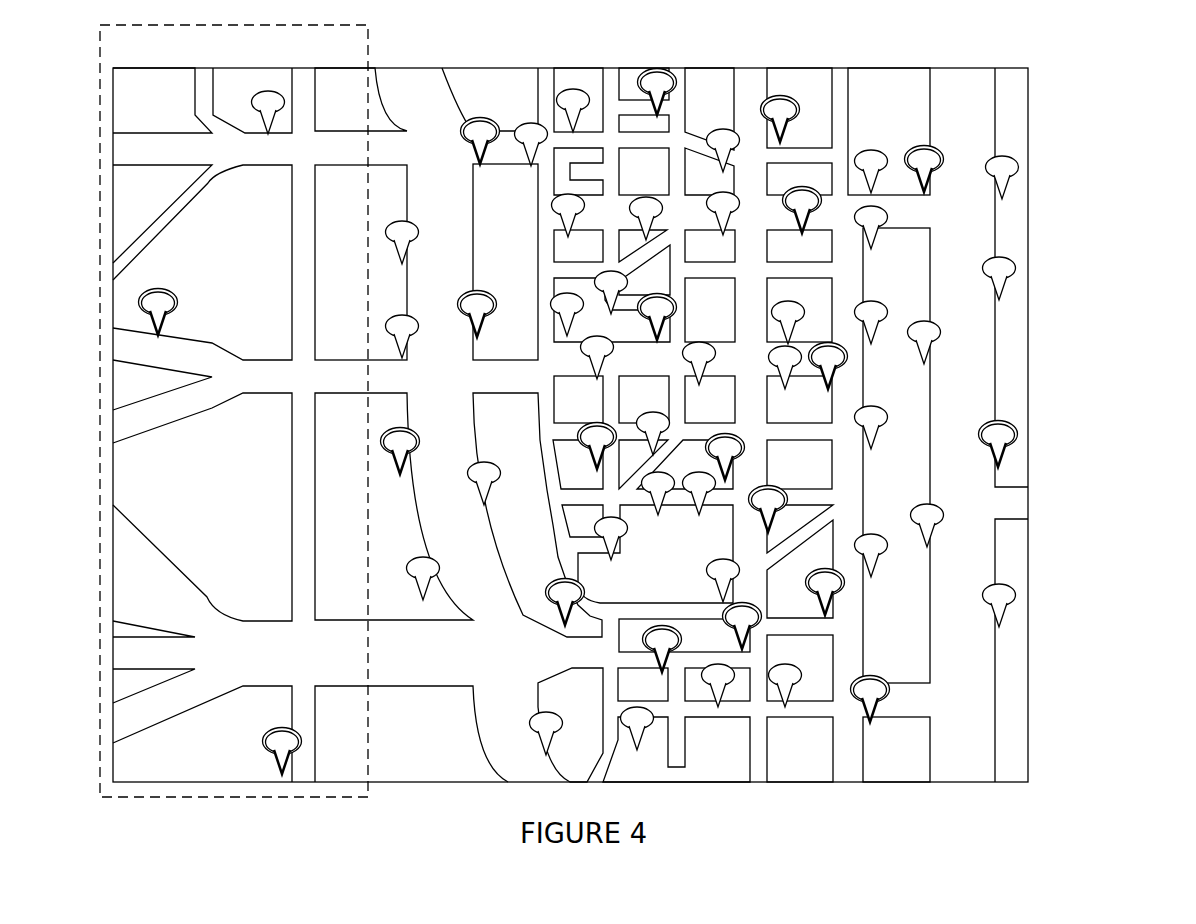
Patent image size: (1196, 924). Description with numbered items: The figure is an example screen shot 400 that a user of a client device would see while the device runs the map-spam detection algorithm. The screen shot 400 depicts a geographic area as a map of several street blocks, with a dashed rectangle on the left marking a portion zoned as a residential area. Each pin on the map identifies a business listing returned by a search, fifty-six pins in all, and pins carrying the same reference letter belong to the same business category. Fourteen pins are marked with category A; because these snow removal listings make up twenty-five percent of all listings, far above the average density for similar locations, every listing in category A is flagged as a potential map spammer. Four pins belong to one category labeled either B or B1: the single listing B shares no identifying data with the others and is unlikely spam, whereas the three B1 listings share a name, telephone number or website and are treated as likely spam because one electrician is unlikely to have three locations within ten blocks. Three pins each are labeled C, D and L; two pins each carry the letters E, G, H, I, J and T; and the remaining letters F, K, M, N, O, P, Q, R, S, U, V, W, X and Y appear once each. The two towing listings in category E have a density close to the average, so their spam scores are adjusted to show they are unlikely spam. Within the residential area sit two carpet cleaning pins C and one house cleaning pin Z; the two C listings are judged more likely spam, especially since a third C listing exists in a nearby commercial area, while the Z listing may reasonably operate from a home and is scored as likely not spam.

The screen shot 400 is at (1072, 97).
The business category A pins A is at (699, 384).
The business listing B is at (927, 525).
The business listing B1 pins B1 is at (734, 396).
The business category C pins C is at (376, 532).
The business category D pins D is at (742, 375).
The business category E pins E is at (474, 488).
The business category F pin F is at (636, 237).
The business category G pins G is at (686, 559).
The business category H pins H is at (647, 567).
The business category I pins I is at (863, 379).
The business category J pins J is at (805, 408).
The business category K pin K is at (871, 171).
The business category L pins L is at (663, 415).
The business category M pin M is at (871, 227).
The business category N pin N is at (871, 322).
The business category O pin O is at (871, 427).
The business category P pin P is at (785, 685).
The business category Q pin Q is at (637, 728).
The business category R pin R is at (785, 367).
The business category S pin S is at (788, 322).
The business category T pins T is at (646, 214).
The business category U pin U is at (723, 150).
The business category V pin V is at (646, 218).
The business category W pin W is at (611, 292).
The business category X pin X is at (567, 314).
The business category Y pin Y is at (699, 493).
The business listing Z is at (268, 112).